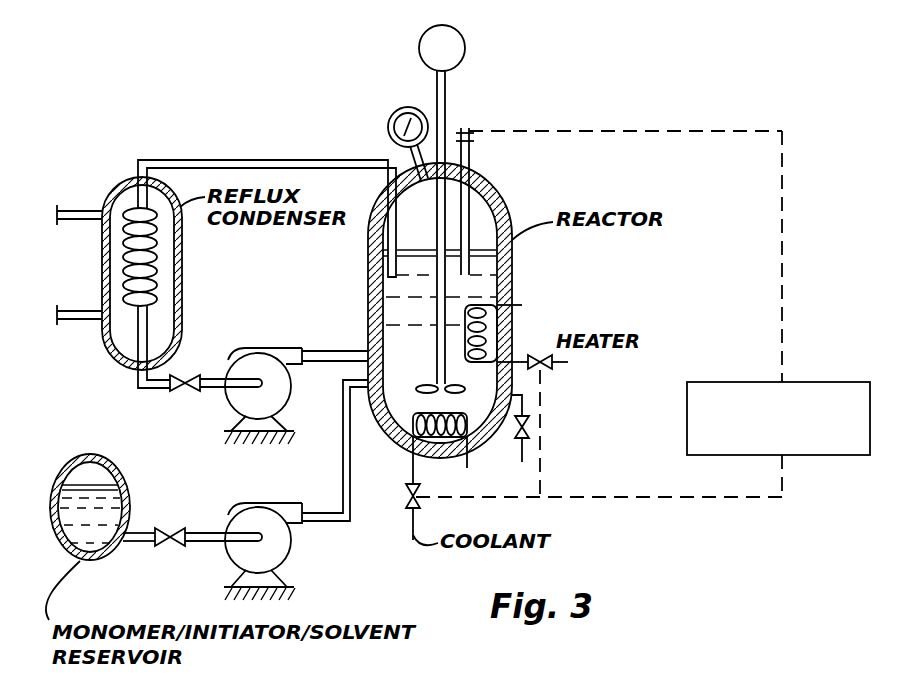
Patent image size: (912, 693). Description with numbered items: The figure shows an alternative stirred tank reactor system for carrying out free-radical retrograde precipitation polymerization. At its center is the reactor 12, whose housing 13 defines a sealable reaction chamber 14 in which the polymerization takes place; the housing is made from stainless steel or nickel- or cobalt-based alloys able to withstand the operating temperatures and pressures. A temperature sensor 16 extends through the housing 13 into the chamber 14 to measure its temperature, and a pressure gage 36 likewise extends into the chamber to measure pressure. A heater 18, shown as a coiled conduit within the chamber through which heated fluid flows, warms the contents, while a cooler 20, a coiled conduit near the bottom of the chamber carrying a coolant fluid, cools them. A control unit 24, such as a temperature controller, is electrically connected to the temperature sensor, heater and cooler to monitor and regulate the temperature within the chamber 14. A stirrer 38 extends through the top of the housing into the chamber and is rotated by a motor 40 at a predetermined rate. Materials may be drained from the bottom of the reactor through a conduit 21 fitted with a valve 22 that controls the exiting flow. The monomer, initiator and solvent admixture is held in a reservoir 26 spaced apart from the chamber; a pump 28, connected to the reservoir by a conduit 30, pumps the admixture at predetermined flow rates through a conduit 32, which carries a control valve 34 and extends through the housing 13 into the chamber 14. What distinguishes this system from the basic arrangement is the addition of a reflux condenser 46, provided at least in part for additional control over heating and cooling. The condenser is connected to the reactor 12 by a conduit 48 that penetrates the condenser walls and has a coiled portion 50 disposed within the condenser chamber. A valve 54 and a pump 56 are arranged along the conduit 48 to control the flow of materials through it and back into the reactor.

The reactor 12 is at (514, 280).
The housing 13 is at (500, 203).
The reaction chamber 14 is at (400, 308).
The temperature sensor 16 is at (469, 164).
The heater 18 is at (515, 330).
The cooler 20 is at (447, 437).
The conduit 21 is at (523, 402).
The valve 22 is at (530, 434).
The control unit 24 is at (812, 386).
The reservoir 26 is at (65, 466).
The pump 28 is at (280, 548).
The conduit 30 is at (202, 533).
The conduit 32 is at (350, 500).
The control valve 34 is at (160, 530).
The pressure gage 36 is at (404, 108).
The stirrer 38 is at (360, 360).
The motor 40 is at (459, 59).
The reflux condenser 46 is at (103, 186).
The conduit 48 is at (236, 161).
The coiled portion 50 is at (121, 258).
The valve 54 is at (189, 392).
The pump 56 is at (280, 392).